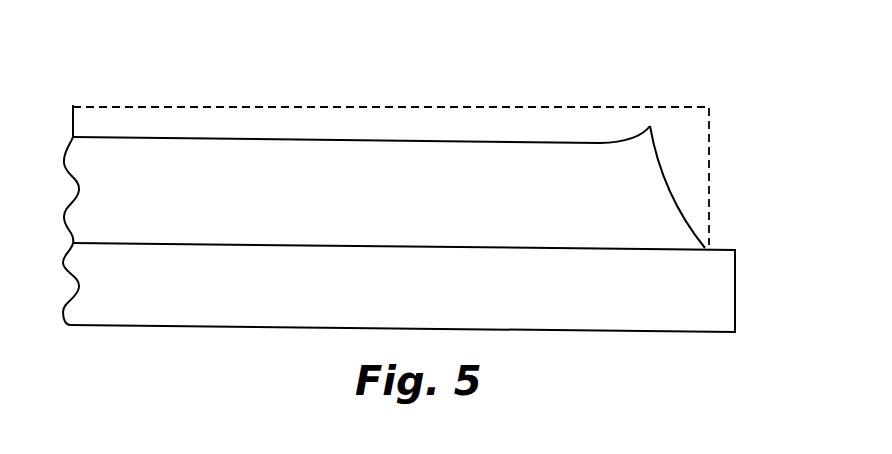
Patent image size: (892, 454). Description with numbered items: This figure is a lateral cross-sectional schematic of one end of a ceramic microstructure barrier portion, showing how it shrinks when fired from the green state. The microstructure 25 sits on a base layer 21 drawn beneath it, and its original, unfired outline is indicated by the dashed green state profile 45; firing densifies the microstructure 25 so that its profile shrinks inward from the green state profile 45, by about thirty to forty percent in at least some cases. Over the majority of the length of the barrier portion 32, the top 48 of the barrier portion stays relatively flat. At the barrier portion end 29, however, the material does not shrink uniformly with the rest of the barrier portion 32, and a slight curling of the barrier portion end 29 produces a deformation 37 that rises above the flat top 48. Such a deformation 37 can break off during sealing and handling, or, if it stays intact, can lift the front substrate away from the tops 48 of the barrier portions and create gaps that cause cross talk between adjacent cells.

The substrate 21 is at (612, 317).
The microstructure 25 is at (462, 140).
The barrier portion end 29 is at (685, 166).
The barrier portion 32 is at (170, 160).
The deformation 37 is at (650, 126).
The green state profile 45 is at (376, 105).
The top of the barrier portion 48 is at (267, 140).